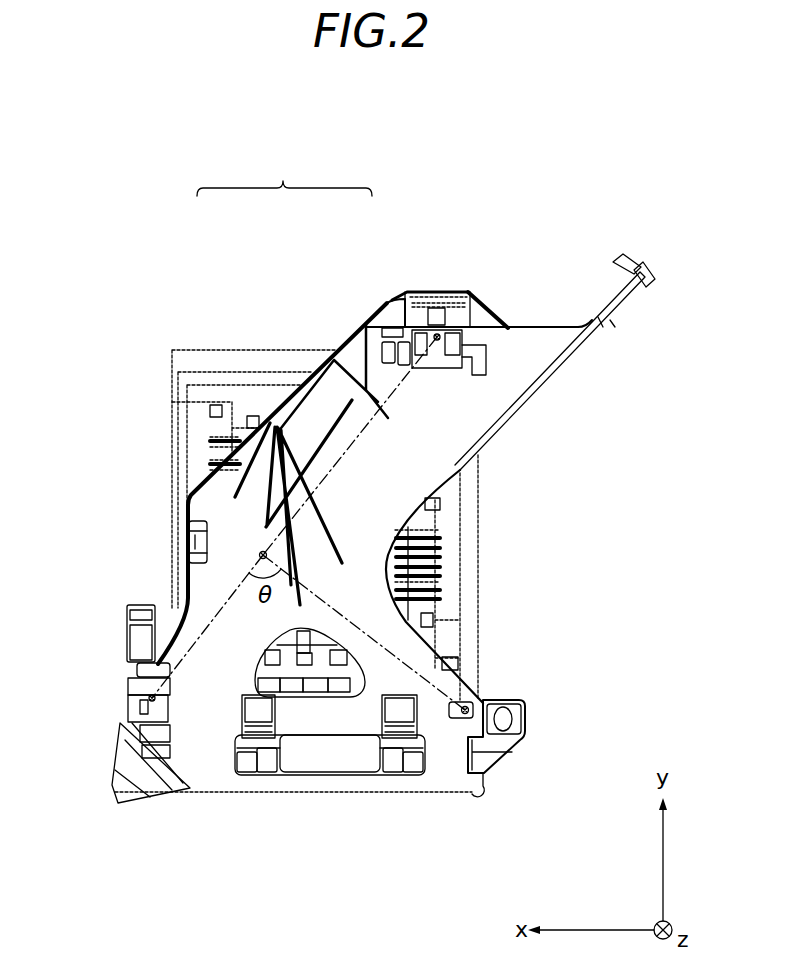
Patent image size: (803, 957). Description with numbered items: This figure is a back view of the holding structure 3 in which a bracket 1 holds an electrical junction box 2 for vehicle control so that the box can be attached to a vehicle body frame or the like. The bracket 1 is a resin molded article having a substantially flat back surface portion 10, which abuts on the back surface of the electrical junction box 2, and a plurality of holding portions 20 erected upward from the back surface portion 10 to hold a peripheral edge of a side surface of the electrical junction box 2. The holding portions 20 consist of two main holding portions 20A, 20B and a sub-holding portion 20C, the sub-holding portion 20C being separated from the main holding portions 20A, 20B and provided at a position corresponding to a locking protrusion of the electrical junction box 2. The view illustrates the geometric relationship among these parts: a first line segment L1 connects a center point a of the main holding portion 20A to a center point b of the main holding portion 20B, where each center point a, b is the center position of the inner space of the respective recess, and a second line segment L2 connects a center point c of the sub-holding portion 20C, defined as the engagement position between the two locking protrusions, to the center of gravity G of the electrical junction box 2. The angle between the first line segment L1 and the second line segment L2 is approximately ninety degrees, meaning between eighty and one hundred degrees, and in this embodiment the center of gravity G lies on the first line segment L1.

The bracket 1 is at (366, 302).
The electrical junction box 2 is at (210, 346).
The holding structure 3 is at (284, 176).
The back surface portion 10 is at (470, 437).
The holding portions 20 is at (361, 512).
The main holding portion 20A is at (441, 286).
The main holding portion 20B is at (126, 708).
The sub-holding portion 20C is at (487, 692).
The center point a is at (437, 340).
The center point b is at (155, 700).
The center point c is at (465, 714).
The center of gravity G is at (261, 556).
The first line segment L1 is at (203, 636).
The second line segment L2 is at (345, 617).